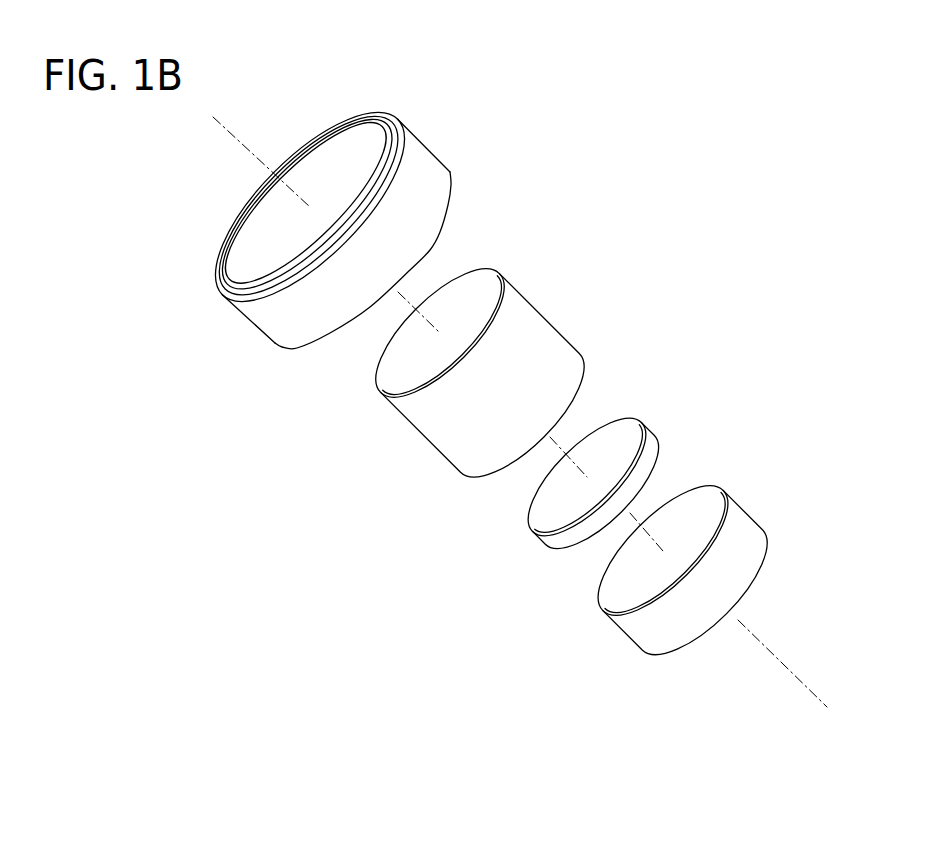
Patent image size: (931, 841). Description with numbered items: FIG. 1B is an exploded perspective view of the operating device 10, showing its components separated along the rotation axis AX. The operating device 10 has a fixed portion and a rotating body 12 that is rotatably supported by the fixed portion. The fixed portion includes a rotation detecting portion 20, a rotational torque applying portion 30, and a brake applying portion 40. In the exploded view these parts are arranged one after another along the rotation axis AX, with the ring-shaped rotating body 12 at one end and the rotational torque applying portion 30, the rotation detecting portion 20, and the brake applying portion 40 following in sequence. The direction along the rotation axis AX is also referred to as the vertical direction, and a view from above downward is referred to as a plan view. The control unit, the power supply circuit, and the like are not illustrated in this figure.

The operating device 10 is at (420, 592).
The rotating body 12 is at (420, 175).
The rotation detecting portion 20 is at (653, 433).
The rotational torque applying portion 30 is at (537, 340).
The brake applying portion 40 is at (743, 523).
The rotation axis AX is at (240, 142).